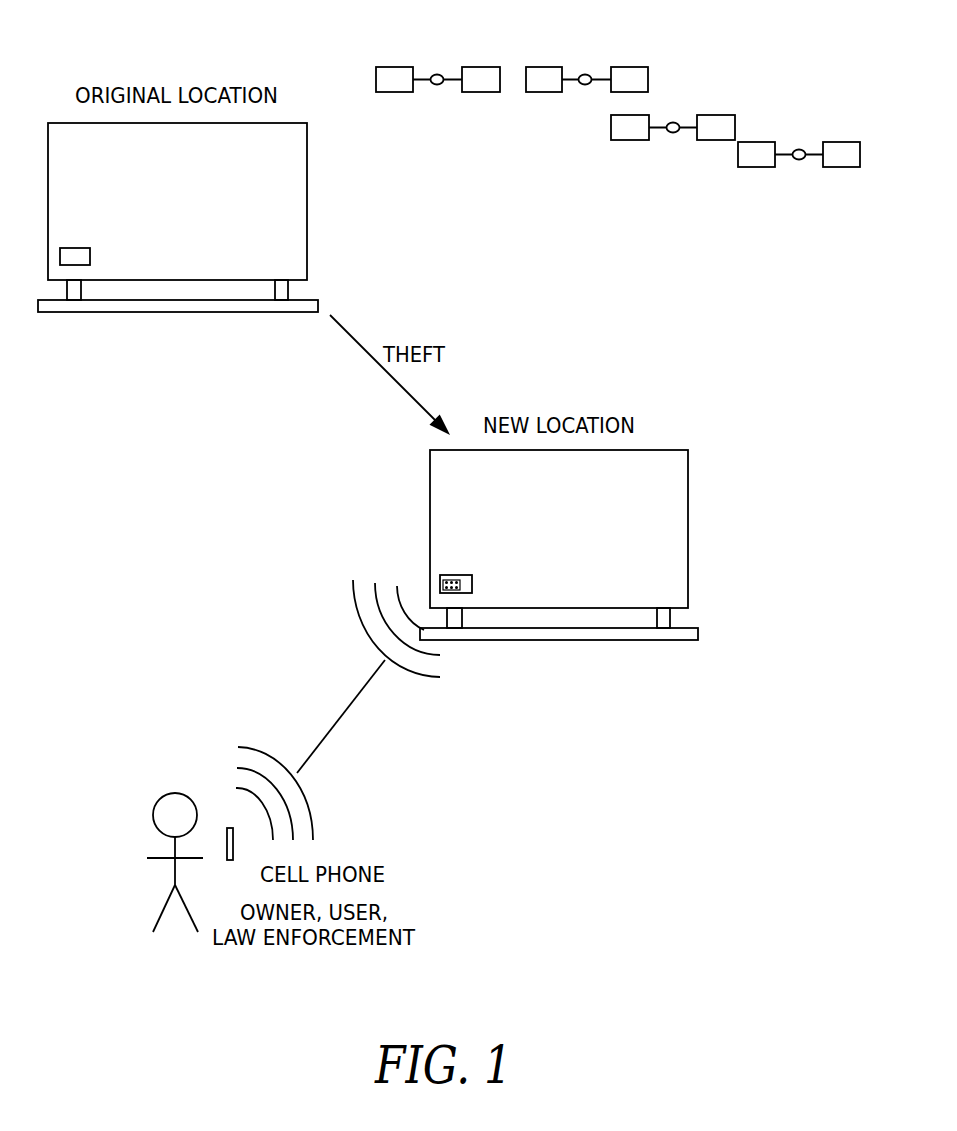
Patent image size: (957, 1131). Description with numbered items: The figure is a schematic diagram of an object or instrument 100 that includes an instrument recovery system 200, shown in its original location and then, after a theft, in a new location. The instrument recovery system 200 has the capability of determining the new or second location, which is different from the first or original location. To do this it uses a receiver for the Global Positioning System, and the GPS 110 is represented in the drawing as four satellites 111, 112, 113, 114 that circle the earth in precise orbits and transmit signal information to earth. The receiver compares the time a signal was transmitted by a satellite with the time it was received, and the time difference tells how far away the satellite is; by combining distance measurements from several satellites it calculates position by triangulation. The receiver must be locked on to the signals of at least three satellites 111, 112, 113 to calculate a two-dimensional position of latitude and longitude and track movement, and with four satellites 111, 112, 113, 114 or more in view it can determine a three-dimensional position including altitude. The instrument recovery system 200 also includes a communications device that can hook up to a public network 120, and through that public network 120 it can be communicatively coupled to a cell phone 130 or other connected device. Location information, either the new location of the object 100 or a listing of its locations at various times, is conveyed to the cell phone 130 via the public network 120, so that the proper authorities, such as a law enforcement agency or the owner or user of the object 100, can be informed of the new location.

The object or instrument 100 is at (307, 183).
The GPS 110 is at (633, 90).
The satellite 111 is at (393, 67).
The satellite 112 is at (633, 67).
The satellite 113 is at (718, 115).
The satellite 114 is at (842, 142).
The public network 120 is at (478, 737).
The cell phone 130 is at (233, 846).
The instrument recovery system 200 is at (80, 247).